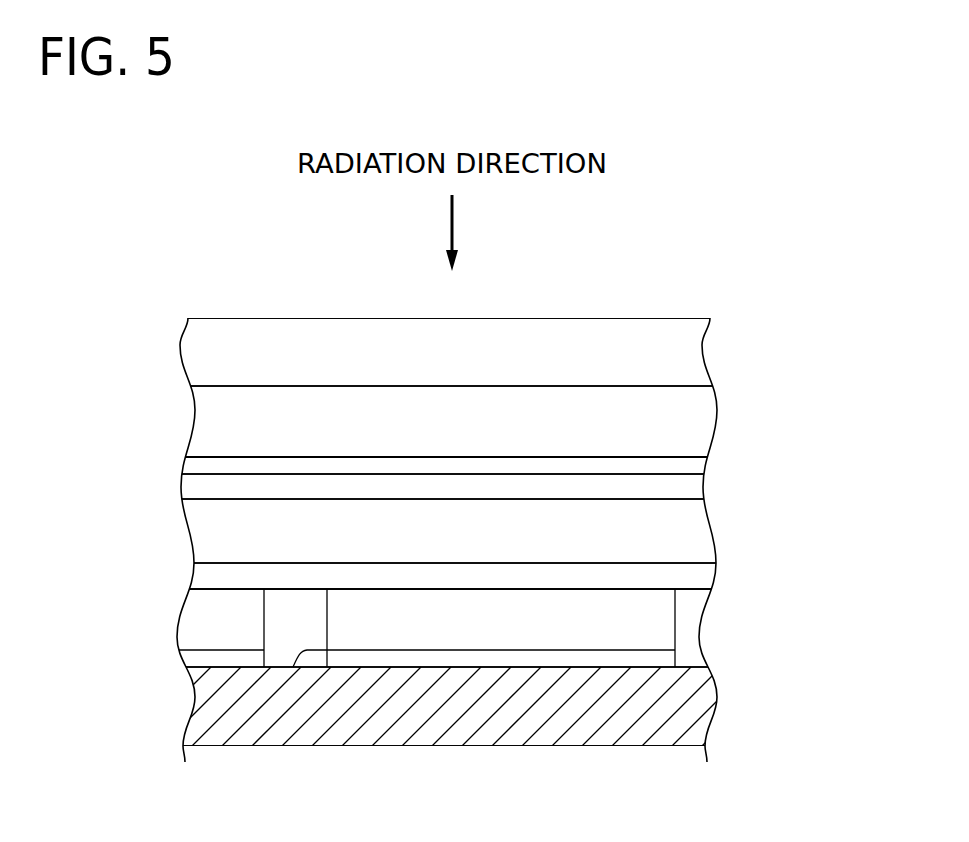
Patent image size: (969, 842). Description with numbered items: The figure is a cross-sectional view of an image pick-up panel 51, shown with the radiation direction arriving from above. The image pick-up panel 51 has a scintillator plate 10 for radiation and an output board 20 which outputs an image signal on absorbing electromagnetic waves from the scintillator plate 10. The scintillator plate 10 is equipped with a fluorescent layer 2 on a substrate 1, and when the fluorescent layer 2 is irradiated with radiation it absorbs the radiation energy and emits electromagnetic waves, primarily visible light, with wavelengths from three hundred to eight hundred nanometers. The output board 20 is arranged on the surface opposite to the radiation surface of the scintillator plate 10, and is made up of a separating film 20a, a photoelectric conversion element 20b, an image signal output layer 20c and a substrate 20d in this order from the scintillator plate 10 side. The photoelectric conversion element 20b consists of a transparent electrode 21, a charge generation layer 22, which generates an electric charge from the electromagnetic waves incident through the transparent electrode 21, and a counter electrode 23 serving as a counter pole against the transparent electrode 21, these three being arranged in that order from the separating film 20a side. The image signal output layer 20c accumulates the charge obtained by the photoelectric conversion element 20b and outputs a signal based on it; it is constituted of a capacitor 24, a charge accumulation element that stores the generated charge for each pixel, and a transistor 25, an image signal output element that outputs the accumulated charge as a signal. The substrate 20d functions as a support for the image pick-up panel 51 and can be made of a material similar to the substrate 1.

The image pick-up panel 51 is at (603, 290).
The scintillator plate for radiation 10 is at (186, 318).
The substrate 1 is at (685, 348).
The fluorescent layer 2 is at (697, 411).
The output board 20 is at (146, 457).
The separating film 20a is at (692, 465).
The photoelectric conversion element 20b is at (778, 463).
The transparent electrode 21 is at (690, 489).
The charge generation layer 22 is at (692, 530).
The counter electrode 23 is at (707, 575).
The image signal output layer 20c is at (690, 628).
The capacitor 24 is at (222, 660).
The transistor 25 is at (313, 657).
The substrate 20d is at (697, 708).